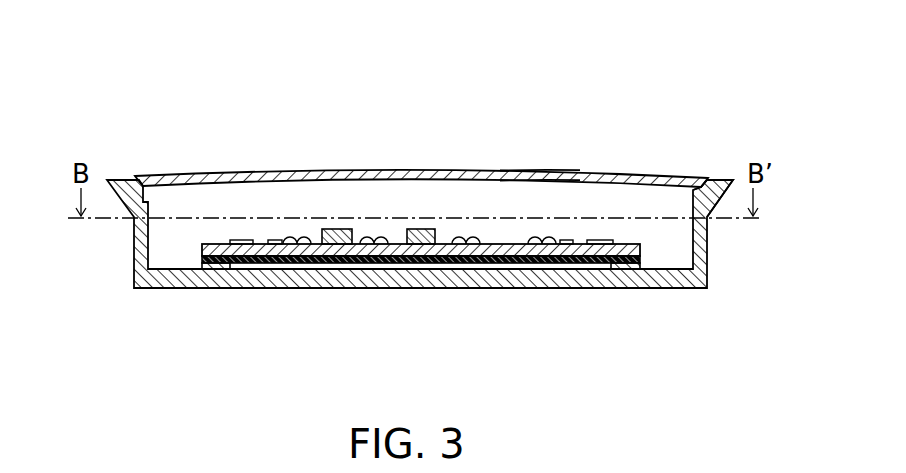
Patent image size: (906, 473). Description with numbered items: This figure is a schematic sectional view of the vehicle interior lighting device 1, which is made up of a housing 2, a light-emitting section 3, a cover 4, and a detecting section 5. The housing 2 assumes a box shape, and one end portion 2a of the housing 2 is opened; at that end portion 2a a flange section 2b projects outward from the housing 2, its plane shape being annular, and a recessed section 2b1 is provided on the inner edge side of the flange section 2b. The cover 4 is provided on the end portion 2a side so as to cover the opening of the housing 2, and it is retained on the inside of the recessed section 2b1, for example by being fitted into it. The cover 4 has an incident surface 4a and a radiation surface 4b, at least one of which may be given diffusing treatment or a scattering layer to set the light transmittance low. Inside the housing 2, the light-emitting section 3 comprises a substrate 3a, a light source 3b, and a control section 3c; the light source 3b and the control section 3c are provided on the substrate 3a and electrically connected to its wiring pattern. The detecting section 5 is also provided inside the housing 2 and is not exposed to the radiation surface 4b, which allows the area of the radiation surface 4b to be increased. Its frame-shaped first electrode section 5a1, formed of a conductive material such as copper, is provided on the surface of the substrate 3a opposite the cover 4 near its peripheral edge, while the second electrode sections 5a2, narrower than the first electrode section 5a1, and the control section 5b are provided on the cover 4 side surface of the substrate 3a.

The vehicle interior lighting device 1 is at (128, 95).
The housing 2 is at (702, 270).
The end portion 2a is at (467, 195).
The flange section 2b is at (712, 178).
The recessed section 2b1 is at (704, 192).
The light-emitting section 3 is at (388, 226).
The substrate 3a is at (394, 256).
The light source 3b is at (370, 242).
The control section 3c is at (425, 229).
The cover 4 is at (572, 176).
The incident surface 4a is at (533, 184).
The radiation surface 4b is at (535, 170).
The detecting section 5 is at (455, 272).
The first electrode section 5a1 is at (262, 258).
The second electrode sections 5a2 is at (273, 243).
The control section 5b is at (332, 228).